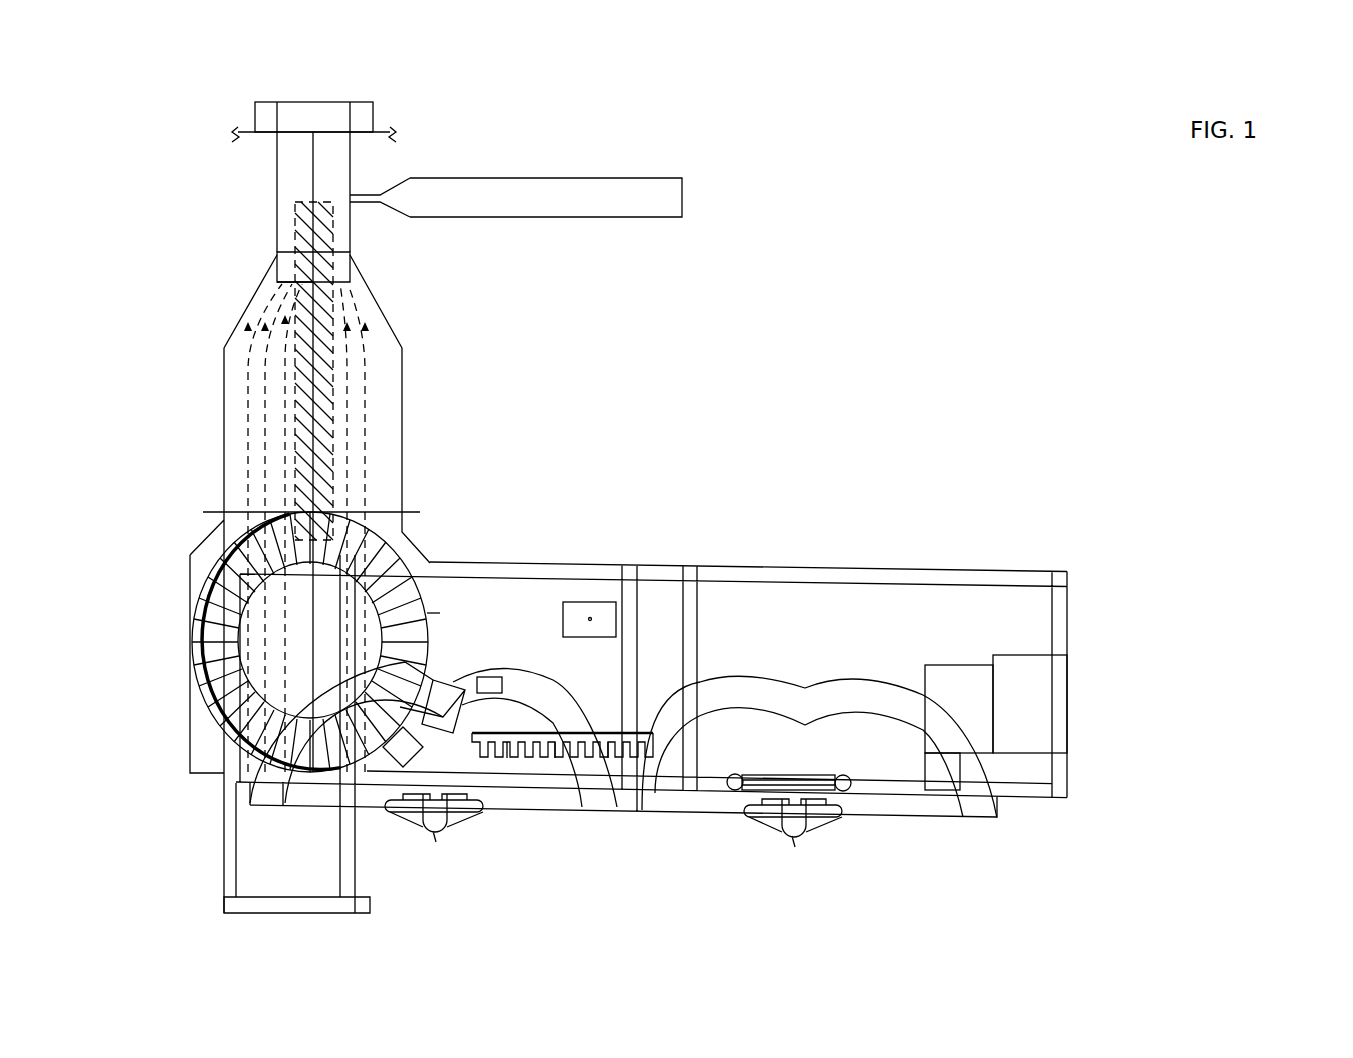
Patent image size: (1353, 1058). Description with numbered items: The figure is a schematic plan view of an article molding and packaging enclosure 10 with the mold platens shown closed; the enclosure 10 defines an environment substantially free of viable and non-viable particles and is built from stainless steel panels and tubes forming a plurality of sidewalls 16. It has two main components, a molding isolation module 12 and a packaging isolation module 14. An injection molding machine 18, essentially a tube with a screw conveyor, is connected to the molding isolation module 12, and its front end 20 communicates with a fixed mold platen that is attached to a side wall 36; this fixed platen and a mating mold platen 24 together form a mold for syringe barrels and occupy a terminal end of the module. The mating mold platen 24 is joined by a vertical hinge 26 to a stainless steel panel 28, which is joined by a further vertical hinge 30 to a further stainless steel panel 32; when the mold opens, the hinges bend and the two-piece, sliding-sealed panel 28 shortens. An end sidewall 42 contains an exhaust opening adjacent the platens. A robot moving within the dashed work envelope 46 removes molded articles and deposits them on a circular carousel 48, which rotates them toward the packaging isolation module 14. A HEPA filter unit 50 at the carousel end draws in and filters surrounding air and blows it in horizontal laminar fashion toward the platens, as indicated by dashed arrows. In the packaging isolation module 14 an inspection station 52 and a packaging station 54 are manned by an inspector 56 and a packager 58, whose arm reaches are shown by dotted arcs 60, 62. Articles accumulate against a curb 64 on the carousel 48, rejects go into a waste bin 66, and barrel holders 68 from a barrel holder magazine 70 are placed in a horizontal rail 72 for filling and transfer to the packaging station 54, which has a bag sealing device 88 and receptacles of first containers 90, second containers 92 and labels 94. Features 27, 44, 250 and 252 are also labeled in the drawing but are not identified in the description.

The article molding and packaging enclosure 10 is at (723, 365).
The molding isolation module 12 is at (428, 413).
The packaging isolation module 14 is at (797, 530).
The sidewalls 16 is at (224, 430).
The injection molding machine 18 is at (575, 172).
The front end 20 is at (365, 193).
The mating mold platen 24 is at (277, 163).
The vertical hinge 26 is at (277, 252).
The column wall 27 is at (350, 237).
The stainless steel panel 28 is at (277, 283).
The vertical hinge 30 is at (224, 348).
The further stainless steel panel 32 is at (224, 478).
The side wall 36 is at (377, 300).
The end sidewall 42 is at (380, 132).
The cap 44 is at (310, 112).
The work envelope 46 is at (333, 455).
The circular carousel 48 is at (393, 565).
The HEPA filter unit 50 is at (275, 858).
The inspection station 52 is at (565, 593).
The packaging station 54 is at (822, 630).
The inspector 56 is at (436, 842).
The packager 58 is at (795, 847).
The dotted arc 60 is at (508, 699).
The dotted arc 62 is at (553, 682).
The curb 64 is at (440, 613).
The waste bin 66 is at (443, 680).
The barrel holders 68 is at (608, 758).
The barrel holder magazine 70 is at (418, 747).
The horizontal rail 72 is at (552, 733).
The bag sealing device 88 is at (810, 773).
The first containers 90 is at (958, 690).
The second containers 92 is at (1033, 680).
The labels 94 is at (933, 777).
The sensor 250 is at (488, 675).
The sensor 252 is at (592, 617).